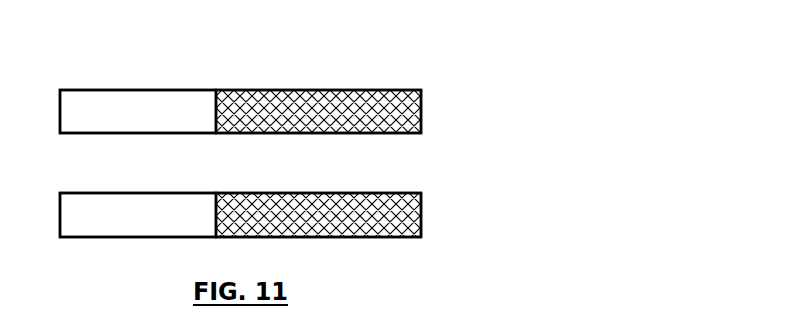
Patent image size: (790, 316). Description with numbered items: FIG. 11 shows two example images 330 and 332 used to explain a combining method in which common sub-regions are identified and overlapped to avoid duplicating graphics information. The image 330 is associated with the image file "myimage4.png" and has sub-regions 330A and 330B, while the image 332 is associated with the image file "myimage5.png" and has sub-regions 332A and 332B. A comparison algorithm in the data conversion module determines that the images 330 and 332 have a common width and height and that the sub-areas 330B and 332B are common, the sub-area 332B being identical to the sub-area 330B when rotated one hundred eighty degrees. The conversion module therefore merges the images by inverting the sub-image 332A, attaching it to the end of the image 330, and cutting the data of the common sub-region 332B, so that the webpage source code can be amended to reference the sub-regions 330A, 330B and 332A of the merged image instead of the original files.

The image 330 is at (421, 107).
The sub-region 330A is at (198, 90).
The sub-region 330B is at (375, 90).
The image 332 is at (421, 212).
The sub-region 332A is at (198, 193).
The sub-region 332B is at (325, 193).